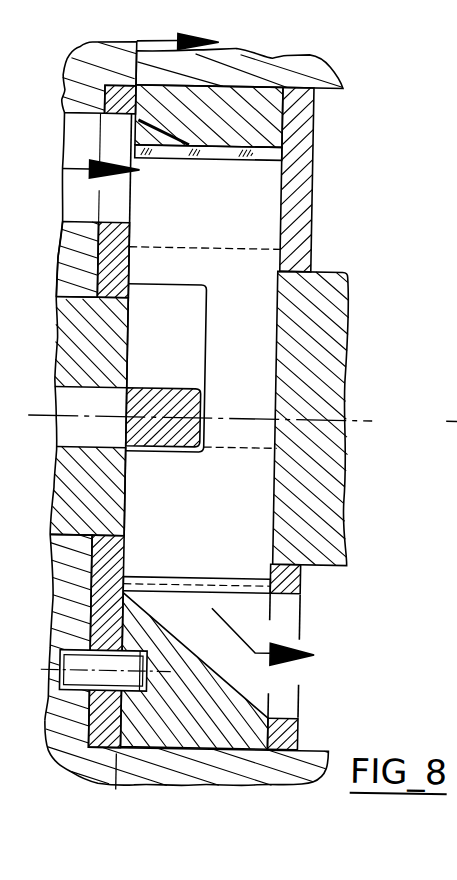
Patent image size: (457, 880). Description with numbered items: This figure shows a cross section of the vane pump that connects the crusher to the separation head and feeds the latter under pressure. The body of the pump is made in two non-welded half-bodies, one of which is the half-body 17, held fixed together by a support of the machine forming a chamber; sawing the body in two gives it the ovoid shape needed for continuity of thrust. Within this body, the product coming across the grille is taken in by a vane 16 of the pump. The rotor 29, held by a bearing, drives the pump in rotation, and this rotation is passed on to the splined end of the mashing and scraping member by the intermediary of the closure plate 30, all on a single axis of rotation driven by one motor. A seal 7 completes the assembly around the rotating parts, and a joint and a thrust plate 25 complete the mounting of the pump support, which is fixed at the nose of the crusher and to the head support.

The seal 7 is at (94, 660).
The vane 16 is at (235, 546).
The half-body 17 is at (250, 118).
The thrust plate 25 is at (107, 263).
The rotor 29 is at (321, 308).
The closure plate 30 is at (284, 218).